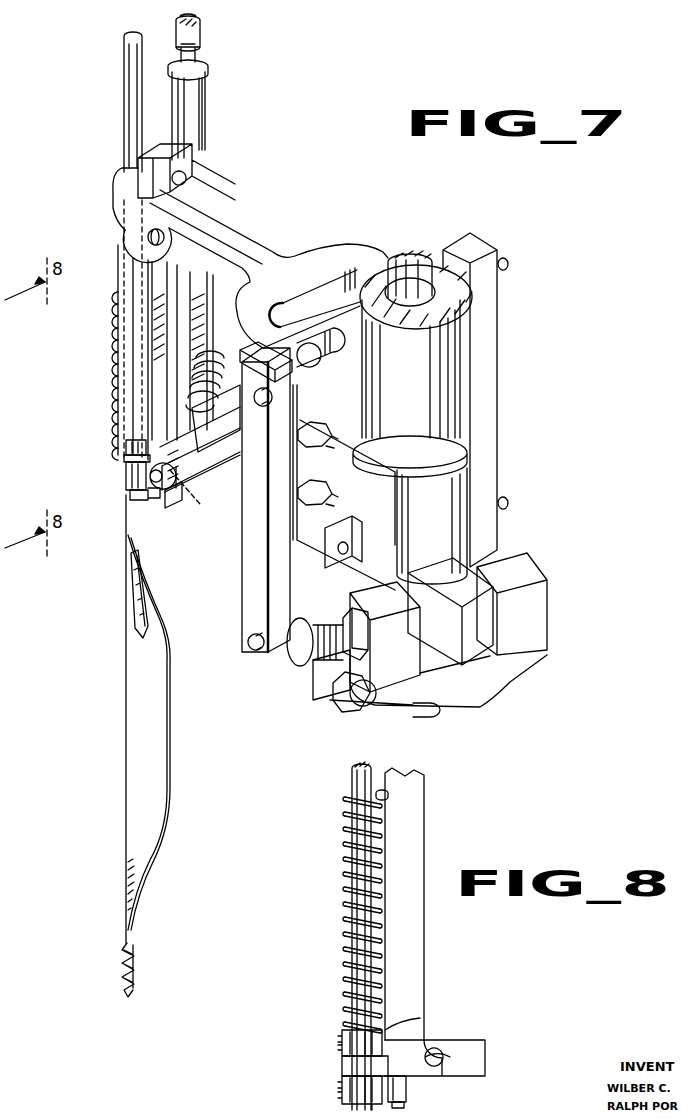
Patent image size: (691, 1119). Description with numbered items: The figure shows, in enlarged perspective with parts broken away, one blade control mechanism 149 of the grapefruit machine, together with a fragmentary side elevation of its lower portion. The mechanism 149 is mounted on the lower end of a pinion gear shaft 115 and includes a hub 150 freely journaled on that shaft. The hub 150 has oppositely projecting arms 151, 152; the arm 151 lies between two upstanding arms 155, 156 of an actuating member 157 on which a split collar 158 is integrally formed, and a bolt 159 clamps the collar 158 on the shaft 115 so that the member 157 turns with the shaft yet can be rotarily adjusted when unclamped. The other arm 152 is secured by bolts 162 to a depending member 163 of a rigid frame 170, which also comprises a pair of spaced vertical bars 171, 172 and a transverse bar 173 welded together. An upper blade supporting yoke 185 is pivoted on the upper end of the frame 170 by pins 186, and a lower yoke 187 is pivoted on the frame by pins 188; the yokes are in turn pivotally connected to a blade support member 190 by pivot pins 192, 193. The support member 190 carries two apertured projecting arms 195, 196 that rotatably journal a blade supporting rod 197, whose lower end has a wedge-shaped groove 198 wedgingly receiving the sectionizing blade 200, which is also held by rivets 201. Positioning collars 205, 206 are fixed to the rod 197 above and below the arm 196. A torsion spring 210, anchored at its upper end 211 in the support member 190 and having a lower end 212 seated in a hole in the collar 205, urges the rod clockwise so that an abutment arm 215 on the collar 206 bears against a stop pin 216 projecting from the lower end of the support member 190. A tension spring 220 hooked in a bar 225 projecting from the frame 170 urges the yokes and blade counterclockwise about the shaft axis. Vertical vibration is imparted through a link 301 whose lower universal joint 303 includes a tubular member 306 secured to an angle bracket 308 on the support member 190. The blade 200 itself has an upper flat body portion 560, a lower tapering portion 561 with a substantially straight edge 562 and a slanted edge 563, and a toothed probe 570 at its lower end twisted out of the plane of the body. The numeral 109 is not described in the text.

In FIG. 7, the cylinder 109 is at (450, 353).
In FIG. 7, the pinion gear shaft 115 is at (412, 262).
In FIG. 7, the blade control mechanism 149 is at (370, 230).
In FIG. 7, the hub 150 is at (457, 480).
In FIG. 7, the arm 151 is at (498, 640).
In FIG. 7, the arm 152 is at (335, 480).
In FIG. 7, the upstanding arm 155 is at (407, 645).
In FIG. 7, the upstanding arm 156 is at (537, 623).
In FIG. 7, the actuating member 157 is at (420, 712).
In FIG. 7, the split collar 158 is at (313, 697).
In FIG. 7, the bolt 159 is at (347, 707).
In FIG. 7, the bolts 162 is at (330, 458).
In FIG. 7, the depending member 163 is at (338, 542).
In FIG. 7, the rigid frame 170 is at (490, 430).
In FIG. 7, the vertical bar 171 is at (252, 567).
In FIG. 7, the vertical bar 172 is at (490, 443).
In FIG. 7, the transverse bar 173 is at (242, 439).
In FIG. 7, the upper blade supporting yoke 185 is at (233, 232).
In FIG. 7, the pins 186 is at (340, 350).
In FIG. 7, the lower yoke 187 is at (228, 512).
In FIG. 8, the lower yoke 187 is at (472, 1060).
In FIG. 7, the pins 188 is at (250, 650).
In FIG. 7, the blade support member 190 is at (130, 345).
In FIG. 8, the blade support member 190 is at (414, 943).
In FIG. 7, the pivot pin 192 is at (140, 237).
In FIG. 7, the pivot pin 193 is at (137, 477).
In FIG. 8, the pivot pin 193 is at (426, 1048).
In FIG. 7, the projecting arm 195 is at (120, 172).
In FIG. 7, the projecting arm 196 is at (126, 458).
In FIG. 8, the projecting arm 196 is at (345, 1060).
In FIG. 7, the blade supporting rod 197 is at (125, 128).
In FIG. 8, the blade supporting rod 197 is at (356, 790).
In FIG. 7, the wedge-shaped groove 198 is at (133, 557).
In FIG. 7, the sectionizing blade 200 is at (218, 790).
In FIG. 7, the rivets 201 is at (135, 615).
In FIG. 7, the positioning collar 205 is at (127, 442).
In FIG. 8, the positioning collar 205 is at (345, 1032).
In FIG. 7, the positioning collar 206 is at (126, 468).
In FIG. 8, the positioning collar 206 is at (345, 1082).
In FIG. 7, the torsion spring 210 is at (113, 320).
In FIG. 8, the torsion spring 210 is at (350, 868).
In FIG. 8, the upper end 211 is at (388, 794).
In FIG. 8, the lower end 212 is at (385, 1030).
In FIG. 7, the abutment arm 215 is at (184, 503).
In FIG. 8, the abutment arm 215 is at (400, 1091).
In FIG. 7, the stop pin 216 is at (130, 496).
In FIG. 8, the stop pin 216 is at (395, 1110).
In FIG. 7, the tension spring 220 is at (195, 383).
In FIG. 7, the bar 225 is at (270, 345).
In FIG. 7, the link 301 is at (202, 30).
In FIG. 7, the universal joint 303 is at (205, 90).
In FIG. 7, the tubular member 306 is at (205, 114).
In FIG. 7, the angle bracket 308 is at (186, 178).
In FIG. 7, the upper flat body portion 560 is at (218, 692).
In FIG. 7, the lower tapering portion 561 is at (138, 848).
In FIG. 7, the straight edge 562 is at (125, 848).
In FIG. 7, the slanted edge 563 is at (144, 870).
In FIG. 7, the toothed probe 570 is at (134, 948).